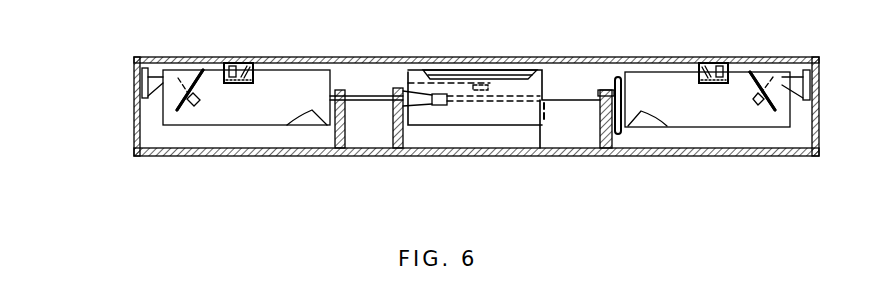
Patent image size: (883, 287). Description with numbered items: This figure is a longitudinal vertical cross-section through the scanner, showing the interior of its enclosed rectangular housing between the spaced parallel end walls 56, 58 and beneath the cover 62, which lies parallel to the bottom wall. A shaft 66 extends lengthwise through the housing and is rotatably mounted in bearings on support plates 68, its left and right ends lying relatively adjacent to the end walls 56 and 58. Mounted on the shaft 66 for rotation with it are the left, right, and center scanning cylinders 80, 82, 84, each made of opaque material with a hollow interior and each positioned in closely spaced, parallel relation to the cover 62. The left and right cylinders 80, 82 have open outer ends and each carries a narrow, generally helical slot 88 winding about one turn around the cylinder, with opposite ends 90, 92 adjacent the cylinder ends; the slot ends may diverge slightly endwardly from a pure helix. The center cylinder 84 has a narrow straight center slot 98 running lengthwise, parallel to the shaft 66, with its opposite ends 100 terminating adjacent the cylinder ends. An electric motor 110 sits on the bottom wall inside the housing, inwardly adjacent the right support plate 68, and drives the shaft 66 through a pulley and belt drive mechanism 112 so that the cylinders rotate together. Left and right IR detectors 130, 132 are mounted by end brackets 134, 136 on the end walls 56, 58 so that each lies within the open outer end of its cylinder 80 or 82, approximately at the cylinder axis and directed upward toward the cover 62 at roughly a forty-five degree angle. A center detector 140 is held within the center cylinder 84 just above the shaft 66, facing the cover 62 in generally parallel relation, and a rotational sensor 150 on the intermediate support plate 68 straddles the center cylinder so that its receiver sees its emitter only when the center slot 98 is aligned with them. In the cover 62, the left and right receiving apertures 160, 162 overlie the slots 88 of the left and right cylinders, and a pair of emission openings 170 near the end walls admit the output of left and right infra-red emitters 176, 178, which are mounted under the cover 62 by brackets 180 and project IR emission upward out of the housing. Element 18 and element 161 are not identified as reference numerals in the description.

The sensing device 18 is at (880, 8).
The left end wall 56 is at (147, 98).
The right end wall 58 is at (819, 133).
The cover 62 is at (553, 57).
The shaft 66 is at (385, 90).
The support plates 68 is at (350, 120).
The left scanning cylinder 80 is at (228, 117).
The right scanning cylinder 82 is at (728, 108).
The center scanning cylinder 84 is at (422, 105).
The helical slot 88 is at (205, 68).
The slot end 90 is at (312, 110).
The slot end 92 is at (178, 110).
The center slot 98 is at (465, 72).
The center slot ends 100 is at (533, 67).
The electric motor 110 is at (230, 62).
The pulley and belt drive mechanism 112 is at (397, 57).
The left IR detector 130 is at (197, 106).
The right IR detector 132 is at (762, 104).
The left end bracket 134 is at (141, 71).
The right end bracket 136 is at (819, 97).
The center detector 140 is at (449, 106).
The rotational sensor 150 is at (408, 125).
The left receiving aperture 160 is at (333, 286).
The controller input 161 is at (609, 283).
The right receiving aperture 162 is at (740, 284).
The emission openings 170 is at (706, 63).
The left infra-red emitter 176 is at (247, 62).
The right infra-red emitter 178 is at (708, 75).
The brackets 180 is at (245, 84).